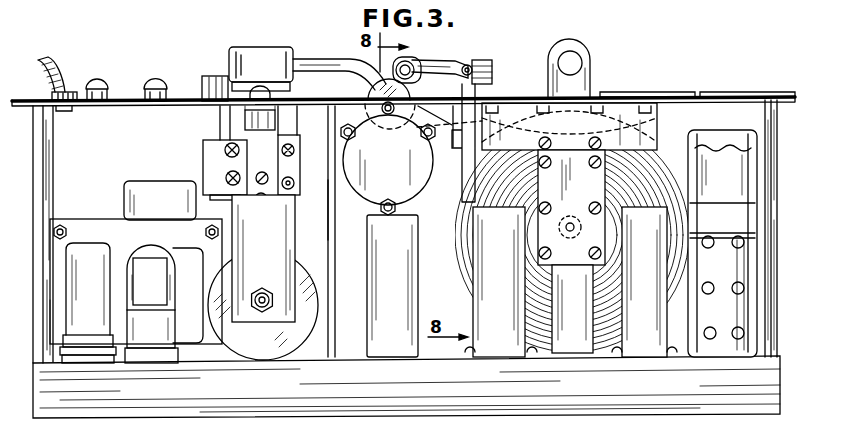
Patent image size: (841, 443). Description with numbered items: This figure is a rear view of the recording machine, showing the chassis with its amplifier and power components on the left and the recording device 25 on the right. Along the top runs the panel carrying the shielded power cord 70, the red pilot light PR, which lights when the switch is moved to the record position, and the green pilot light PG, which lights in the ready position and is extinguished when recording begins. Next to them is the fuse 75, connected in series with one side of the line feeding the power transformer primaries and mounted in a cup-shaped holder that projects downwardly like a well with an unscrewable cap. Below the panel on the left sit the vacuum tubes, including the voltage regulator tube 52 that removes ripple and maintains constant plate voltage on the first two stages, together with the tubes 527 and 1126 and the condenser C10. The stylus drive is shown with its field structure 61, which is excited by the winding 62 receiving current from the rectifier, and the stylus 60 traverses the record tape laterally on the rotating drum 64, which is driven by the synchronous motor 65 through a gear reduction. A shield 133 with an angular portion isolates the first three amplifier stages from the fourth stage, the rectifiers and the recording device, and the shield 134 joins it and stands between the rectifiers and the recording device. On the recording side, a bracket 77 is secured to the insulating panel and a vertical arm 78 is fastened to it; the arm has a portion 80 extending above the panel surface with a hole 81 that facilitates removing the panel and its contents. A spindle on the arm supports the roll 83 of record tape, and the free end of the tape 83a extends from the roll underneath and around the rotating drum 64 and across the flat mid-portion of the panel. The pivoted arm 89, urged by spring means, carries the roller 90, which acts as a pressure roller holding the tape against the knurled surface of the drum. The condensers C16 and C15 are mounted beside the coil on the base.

The power cord 70 is at (58, 69).
The pilot light PR is at (100, 81).
The pilot light PG is at (157, 80).
The fuse 75 is at (207, 76).
The stylus 60 is at (318, 66).
The rotating drum 64 is at (369, 91).
The roller 90 is at (406, 60).
The arm 89 is at (426, 66).
The tape 83a is at (469, 63).
The hole 81 is at (576, 58).
The portion of vertical arm 80 is at (582, 68).
The recording device 25 is at (623, 95).
The shield 133 is at (752, 108).
The roll of record tape 83 is at (608, 335).
The bracket 77 is at (571, 207).
The vertical arm 78 is at (572, 309).
The condenser C16 is at (500, 348).
The condenser C15 is at (643, 337).
The voltage regulator tube 52 is at (742, 262).
The condenser C10 is at (148, 188).
The vacuum tube 527 is at (88, 303).
The vacuum tube 1126 is at (151, 304).
The winding 62 is at (291, 337).
The field structure 61 is at (276, 231).
The shield 134 is at (336, 209).
The synchronous motor 65 is at (371, 178).